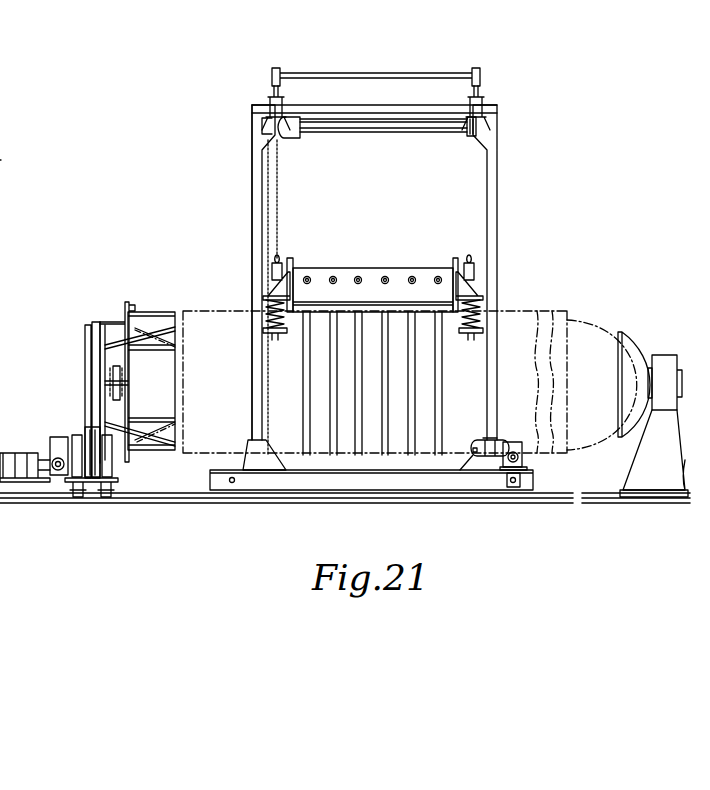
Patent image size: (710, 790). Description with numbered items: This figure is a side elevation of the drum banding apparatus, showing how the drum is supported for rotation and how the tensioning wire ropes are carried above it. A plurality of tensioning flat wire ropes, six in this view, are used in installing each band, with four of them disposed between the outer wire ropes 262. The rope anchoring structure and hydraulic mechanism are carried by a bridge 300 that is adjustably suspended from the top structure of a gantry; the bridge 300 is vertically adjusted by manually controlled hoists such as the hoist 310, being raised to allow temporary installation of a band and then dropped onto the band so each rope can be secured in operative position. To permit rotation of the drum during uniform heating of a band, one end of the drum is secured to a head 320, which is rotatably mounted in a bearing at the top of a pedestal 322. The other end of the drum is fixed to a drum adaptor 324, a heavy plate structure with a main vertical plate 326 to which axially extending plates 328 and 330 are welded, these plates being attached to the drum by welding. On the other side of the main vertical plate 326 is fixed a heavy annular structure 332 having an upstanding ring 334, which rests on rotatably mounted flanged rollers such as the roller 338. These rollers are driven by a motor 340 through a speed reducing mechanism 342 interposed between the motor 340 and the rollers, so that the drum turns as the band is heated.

The hoist 310 is at (16, 151).
The wire rope 262 is at (451, 409).
The bridge 300 is at (422, 253).
The head 320 is at (626, 336).
The pedestal 322 is at (641, 463).
The drum adaptor 324 is at (182, 289).
The main vertical plate 326 is at (131, 386).
The axially extending plate 328 is at (171, 344).
The axially extending plate 330 is at (178, 424).
The annular structure 332 is at (106, 326).
The upstanding ring 334 is at (88, 357).
The flanged roller 338 is at (96, 478).
The motor 340 is at (22, 454).
The speed reducing mechanism 342 is at (61, 436).